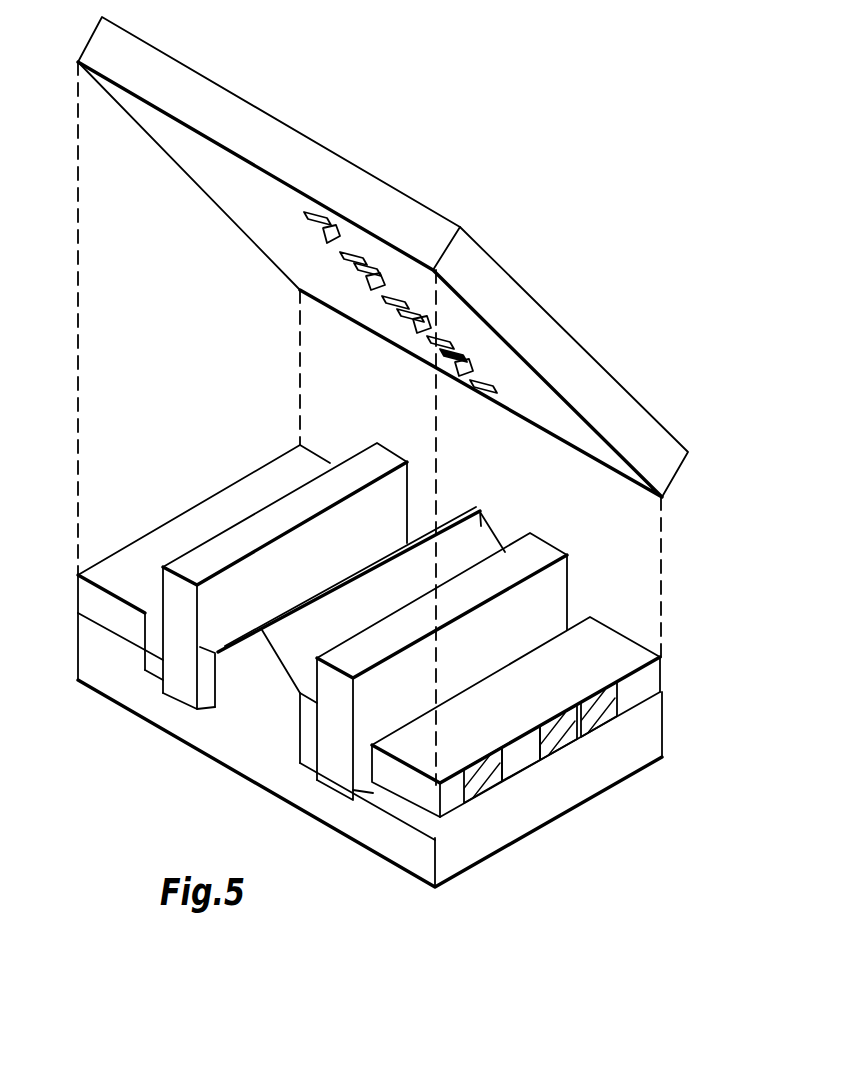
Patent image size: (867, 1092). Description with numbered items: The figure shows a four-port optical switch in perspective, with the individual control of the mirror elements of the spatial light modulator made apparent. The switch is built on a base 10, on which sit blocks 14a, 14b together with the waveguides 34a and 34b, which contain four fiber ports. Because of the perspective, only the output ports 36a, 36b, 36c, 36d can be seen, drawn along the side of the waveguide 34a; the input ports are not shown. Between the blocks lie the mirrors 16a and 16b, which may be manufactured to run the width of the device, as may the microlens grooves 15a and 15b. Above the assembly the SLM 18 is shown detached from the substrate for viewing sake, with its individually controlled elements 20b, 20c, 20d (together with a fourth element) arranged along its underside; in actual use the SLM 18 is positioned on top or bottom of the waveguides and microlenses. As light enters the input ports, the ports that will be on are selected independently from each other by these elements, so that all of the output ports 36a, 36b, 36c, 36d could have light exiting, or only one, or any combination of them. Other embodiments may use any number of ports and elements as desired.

The base 10 is at (400, 845).
The support block 14a is at (478, 659).
The support block 14b is at (285, 562).
The microlens groove 15a is at (294, 815).
The microlens groove 15b is at (157, 750).
The mirror 16a is at (404, 613).
The mirror 16b is at (349, 560).
The SLM 18 is at (383, 257).
The individually controlled element 20b is at (210, 207).
The individually controlled element 20c is at (310, 326).
The individually controlled element 20d is at (411, 374).
The waveguide 34a is at (561, 671).
The waveguide 34b is at (204, 547).
The output port 36a is at (502, 832).
The output port 36b is at (561, 805).
The output port 36c is at (608, 780).
The output port 36d is at (660, 744).